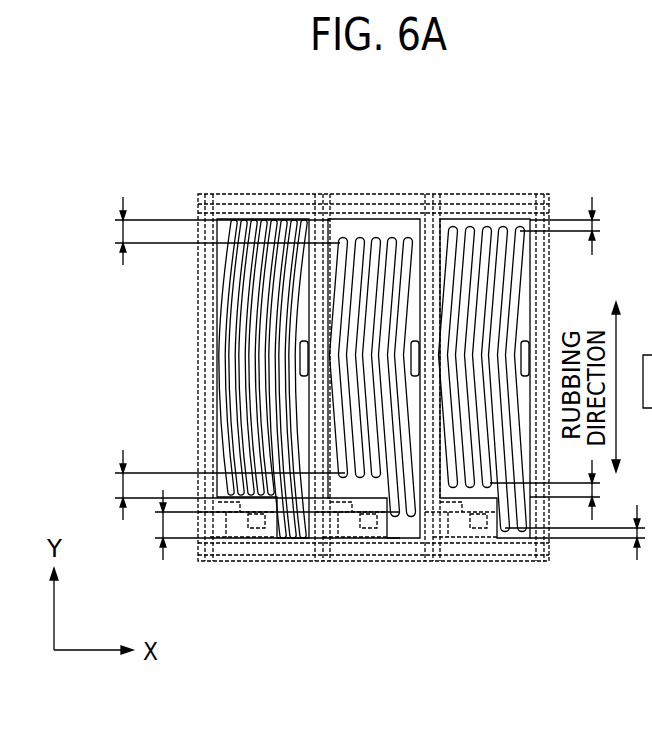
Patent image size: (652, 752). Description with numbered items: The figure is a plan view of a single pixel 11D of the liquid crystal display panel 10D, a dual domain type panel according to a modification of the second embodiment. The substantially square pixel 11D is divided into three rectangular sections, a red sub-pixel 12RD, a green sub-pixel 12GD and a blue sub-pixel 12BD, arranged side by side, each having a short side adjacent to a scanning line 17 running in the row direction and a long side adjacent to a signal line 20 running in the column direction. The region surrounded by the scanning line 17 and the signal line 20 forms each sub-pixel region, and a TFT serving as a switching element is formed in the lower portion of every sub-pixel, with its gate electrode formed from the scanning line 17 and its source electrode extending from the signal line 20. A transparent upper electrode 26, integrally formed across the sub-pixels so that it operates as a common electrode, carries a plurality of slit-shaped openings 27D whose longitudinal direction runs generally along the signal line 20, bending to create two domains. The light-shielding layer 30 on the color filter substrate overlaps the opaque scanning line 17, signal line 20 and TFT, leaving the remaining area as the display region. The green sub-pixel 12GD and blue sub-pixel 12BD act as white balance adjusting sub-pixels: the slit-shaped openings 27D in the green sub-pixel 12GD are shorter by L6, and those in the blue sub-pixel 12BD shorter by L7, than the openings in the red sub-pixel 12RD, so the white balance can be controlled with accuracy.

The liquid crystal display panel 10D is at (277, 82).
The single pixel 11D is at (540, 132).
The red sub-pixel 12RD is at (315, 179).
The green sub-pixel 12GD is at (425, 179).
The blue sub-pixel 12BD is at (538, 179).
The scanning line 17 is at (215, 212).
The signal line 20 is at (211, 400).
The upper electrode 26 is at (216, 300).
The slit-shaped openings 27D is at (224, 352).
The light-shielding layer 30 is at (201, 429).
The element TFT is at (232, 554).
The length L6 is at (245, 378).
The length L7 is at (571, 378).